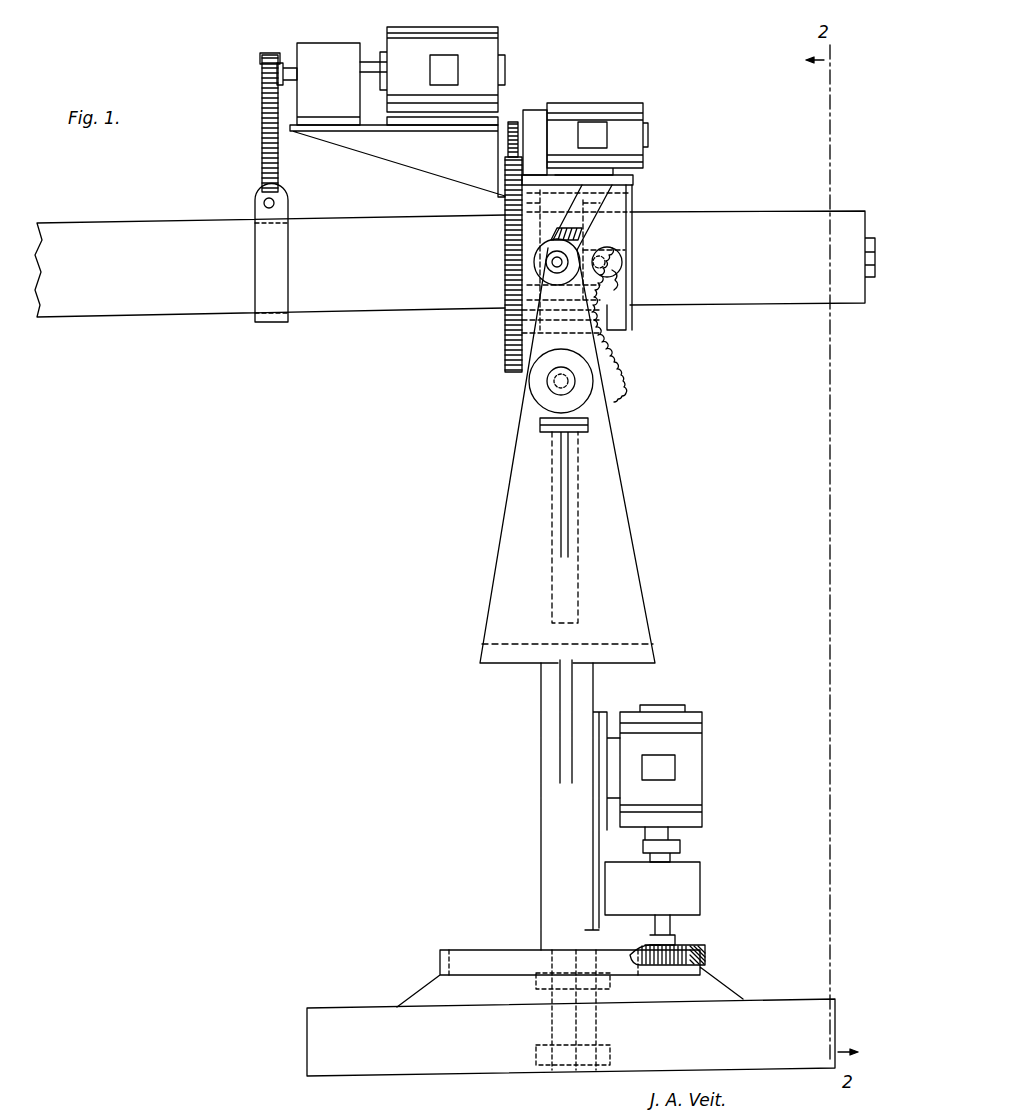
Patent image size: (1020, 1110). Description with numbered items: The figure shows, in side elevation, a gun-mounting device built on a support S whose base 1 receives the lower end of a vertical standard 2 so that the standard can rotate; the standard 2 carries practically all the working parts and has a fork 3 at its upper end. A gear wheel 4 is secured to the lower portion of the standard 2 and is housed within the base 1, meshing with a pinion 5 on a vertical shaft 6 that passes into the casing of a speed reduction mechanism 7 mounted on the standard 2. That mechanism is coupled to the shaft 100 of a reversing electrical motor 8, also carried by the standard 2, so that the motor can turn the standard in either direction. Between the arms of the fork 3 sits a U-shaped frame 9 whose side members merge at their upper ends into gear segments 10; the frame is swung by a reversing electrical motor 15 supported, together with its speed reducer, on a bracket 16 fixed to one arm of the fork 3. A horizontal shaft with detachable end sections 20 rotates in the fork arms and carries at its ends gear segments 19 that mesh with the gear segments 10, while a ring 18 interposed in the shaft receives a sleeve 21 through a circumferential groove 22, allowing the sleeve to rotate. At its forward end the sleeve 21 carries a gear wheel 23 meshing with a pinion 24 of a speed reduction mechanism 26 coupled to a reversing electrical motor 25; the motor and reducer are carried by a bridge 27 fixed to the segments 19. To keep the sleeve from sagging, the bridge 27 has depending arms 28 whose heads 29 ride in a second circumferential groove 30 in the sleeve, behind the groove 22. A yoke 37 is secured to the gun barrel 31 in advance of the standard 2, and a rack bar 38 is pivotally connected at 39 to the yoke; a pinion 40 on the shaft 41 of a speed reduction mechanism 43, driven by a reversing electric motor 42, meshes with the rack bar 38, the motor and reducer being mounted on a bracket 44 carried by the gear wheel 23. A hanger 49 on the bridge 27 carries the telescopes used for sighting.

The base 1 is at (425, 1069).
The support S is at (387, 1002).
The vertical standard 2 is at (545, 783).
The fork 3 is at (623, 520).
The gear wheel 4 is at (650, 945).
The pinion 5 is at (670, 966).
The vertical shaft 6 is at (667, 927).
The speed reduction mechanism 7 is at (690, 885).
The electrical motor 8 is at (697, 750).
The U-shaped frame 9 is at (578, 595).
The gear segments 10 is at (625, 372).
The electrical motor 15 is at (540, 370).
The bracket 16 is at (560, 458).
The ring 18 is at (543, 200).
The gear segments 19 is at (612, 274).
The detachable end sections 20 is at (552, 264).
The sleeve 21 is at (528, 241).
The circumferential groove 22 is at (540, 212).
The gear wheel 23 is at (515, 337).
The pinion 24 is at (512, 125).
The reversing electrical motor 25 is at (617, 105).
The speed reduction mechanism 26 is at (530, 113).
The bridge 27 is at (627, 180).
The depending arms 28 is at (598, 187).
The heads 29 is at (612, 258).
The circumferential groove 30 is at (622, 312).
The barrel 31 is at (110, 308).
The yoke 37 is at (257, 258).
The rack bar 38 is at (262, 147).
The pivotal connection 39 is at (276, 203).
The pinion 40 is at (262, 68).
The shaft 41 is at (286, 62).
The reversing electric motor 42 is at (493, 44).
The speed reduction mechanism 43 is at (330, 52).
The bracket 44 is at (418, 157).
The hanger 49 is at (600, 234).
The shaft 100 is at (680, 837).